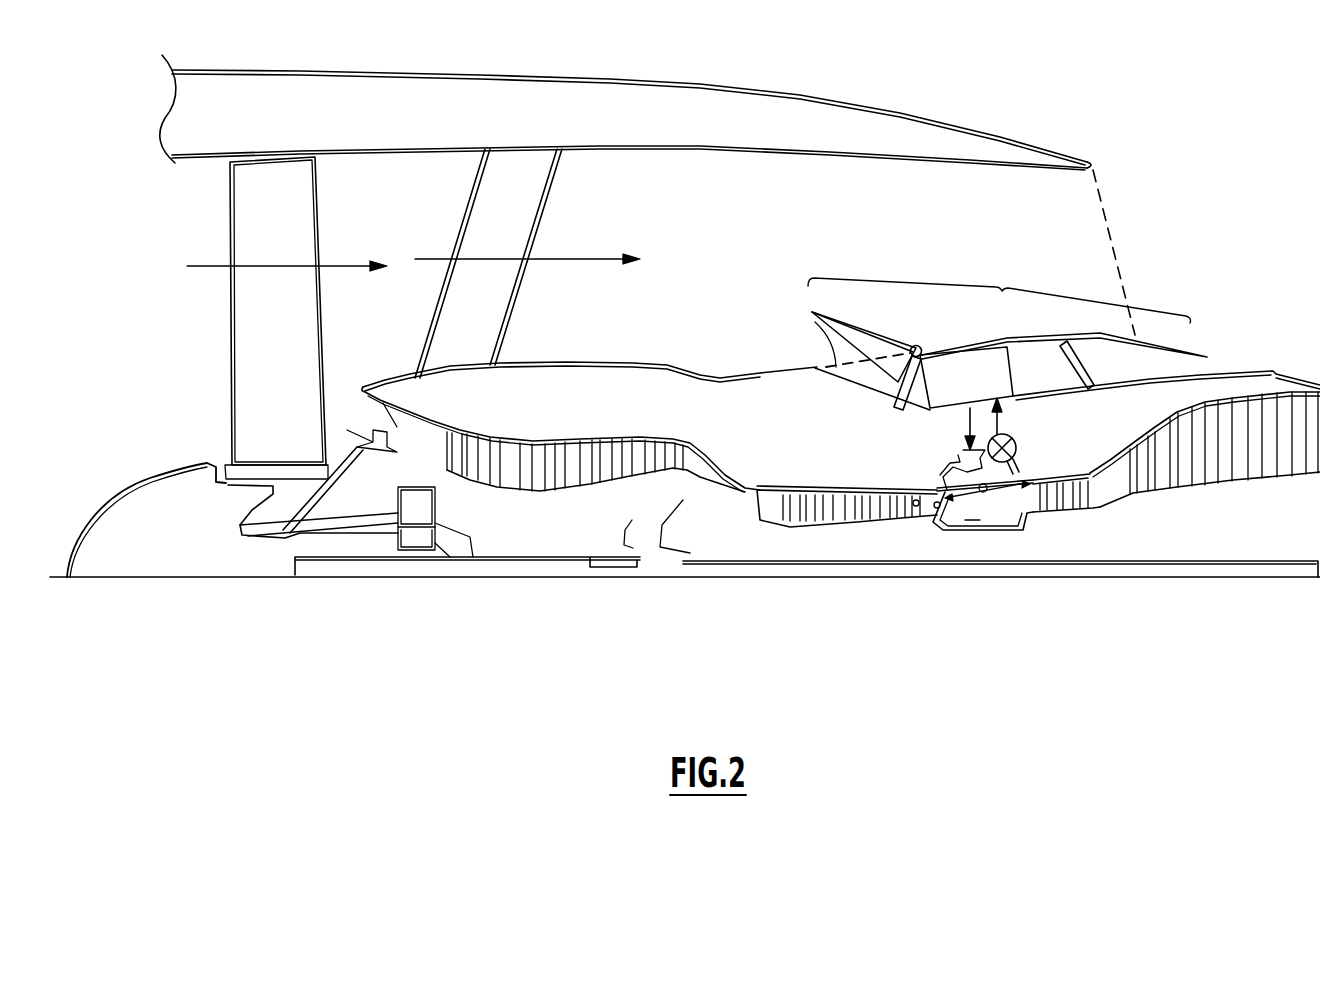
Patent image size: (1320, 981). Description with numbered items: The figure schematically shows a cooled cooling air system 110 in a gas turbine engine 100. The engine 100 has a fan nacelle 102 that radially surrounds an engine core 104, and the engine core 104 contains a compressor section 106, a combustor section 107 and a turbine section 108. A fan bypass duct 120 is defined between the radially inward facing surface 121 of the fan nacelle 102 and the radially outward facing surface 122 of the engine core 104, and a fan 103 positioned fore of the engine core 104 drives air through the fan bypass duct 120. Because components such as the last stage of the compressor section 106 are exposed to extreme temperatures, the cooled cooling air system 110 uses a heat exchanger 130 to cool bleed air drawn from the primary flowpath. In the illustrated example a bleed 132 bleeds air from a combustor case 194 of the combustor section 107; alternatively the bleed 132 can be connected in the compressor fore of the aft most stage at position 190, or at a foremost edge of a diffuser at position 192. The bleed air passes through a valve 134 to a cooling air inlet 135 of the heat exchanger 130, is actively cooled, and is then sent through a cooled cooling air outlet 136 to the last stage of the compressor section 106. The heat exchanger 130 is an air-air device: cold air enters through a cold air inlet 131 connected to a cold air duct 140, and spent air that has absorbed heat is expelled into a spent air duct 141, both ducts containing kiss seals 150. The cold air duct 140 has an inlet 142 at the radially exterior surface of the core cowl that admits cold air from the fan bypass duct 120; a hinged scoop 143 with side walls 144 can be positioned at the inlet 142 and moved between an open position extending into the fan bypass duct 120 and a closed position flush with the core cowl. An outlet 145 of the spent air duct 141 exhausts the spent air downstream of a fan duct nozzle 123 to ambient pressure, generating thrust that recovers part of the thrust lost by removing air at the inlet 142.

The gas turbine engine 100 is at (1063, 124).
The fan nacelle 102 is at (535, 129).
The fan 103 is at (247, 367).
The engine core 104 is at (540, 537).
The compressor section 106 is at (948, 677).
The combustor section 107 is at (1041, 677).
The turbine section 108 is at (1041, 677).
The cooled cooling air system 110 is at (999, 288).
The fan bypass duct 120 is at (724, 226).
The radially inward facing surface 121 is at (618, 150).
The radially outward facing surface 122 is at (647, 363).
The fan duct nozzle 123 is at (1105, 228).
The heat exchanger 130 is at (989, 392).
The cold air inlet 131 is at (916, 403).
The bleed 132 is at (1017, 467).
The valve 134 is at (1016, 445).
The cooling air inlet 135 is at (1008, 397).
The cooled cooling air outlet 136 is at (973, 407).
The cold air duct 140 is at (853, 377).
The spent air duct 141 is at (1068, 377).
The inlet 142 is at (800, 368).
The scoop 143 is at (861, 327).
The side walls 144 is at (870, 347).
The outlet 145 is at (1230, 362).
The kiss seals 150 is at (910, 350).
The position 190 is at (915, 504).
The position 192 is at (937, 506).
The combustor case 194 is at (973, 522).